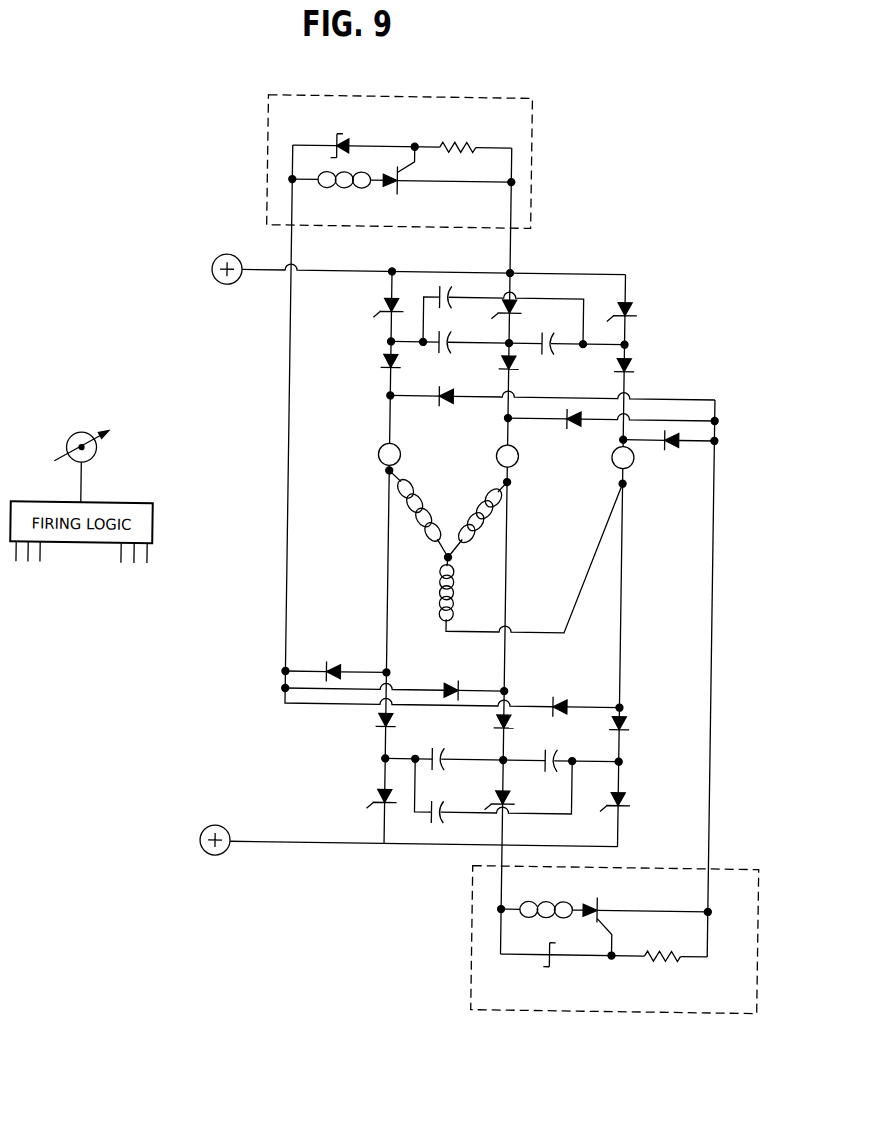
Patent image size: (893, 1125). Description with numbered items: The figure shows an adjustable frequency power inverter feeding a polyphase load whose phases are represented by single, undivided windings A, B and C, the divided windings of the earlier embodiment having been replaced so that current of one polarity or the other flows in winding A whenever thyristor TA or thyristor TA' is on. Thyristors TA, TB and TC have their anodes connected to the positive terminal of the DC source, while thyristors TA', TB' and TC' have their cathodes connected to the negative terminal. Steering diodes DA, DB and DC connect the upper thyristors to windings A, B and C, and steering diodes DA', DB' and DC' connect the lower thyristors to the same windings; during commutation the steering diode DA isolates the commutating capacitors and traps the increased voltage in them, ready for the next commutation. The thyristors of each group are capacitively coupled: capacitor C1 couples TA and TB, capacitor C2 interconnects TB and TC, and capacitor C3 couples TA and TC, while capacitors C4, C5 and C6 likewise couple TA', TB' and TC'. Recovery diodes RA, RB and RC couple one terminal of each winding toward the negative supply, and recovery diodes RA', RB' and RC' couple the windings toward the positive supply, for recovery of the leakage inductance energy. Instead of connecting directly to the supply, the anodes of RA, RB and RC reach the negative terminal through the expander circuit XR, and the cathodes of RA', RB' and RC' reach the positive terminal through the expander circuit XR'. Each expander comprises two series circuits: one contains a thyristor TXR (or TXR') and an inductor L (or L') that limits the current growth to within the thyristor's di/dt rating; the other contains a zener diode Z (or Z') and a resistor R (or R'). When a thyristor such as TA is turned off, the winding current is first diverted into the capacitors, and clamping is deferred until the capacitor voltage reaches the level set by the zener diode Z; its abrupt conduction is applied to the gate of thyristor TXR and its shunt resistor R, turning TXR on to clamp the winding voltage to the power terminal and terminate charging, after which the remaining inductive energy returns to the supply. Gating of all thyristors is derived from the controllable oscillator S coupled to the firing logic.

The expander circuit XR' is at (422, 162).
The zener diode Z' is at (340, 133).
The resistor R' is at (458, 135).
The inductor L' is at (344, 192).
The thyristor TXR' is at (407, 180).
The thyristor TA is at (378, 313).
The thyristor TB is at (516, 317).
The thyristor TC is at (633, 318).
The steering diode DA is at (376, 370).
The steering diode DB is at (520, 372).
The steering diode DC is at (636, 375).
The capacitor C1 is at (456, 307).
The capacitor C2 is at (456, 352).
The capacitor C3 is at (557, 356).
The recovery diode RA is at (445, 387).
The recovery diode RB is at (570, 436).
The recovery diode RC is at (667, 458).
The winding A is at (418, 513).
The winding B is at (477, 519).
The winding C is at (531, 557).
The recovery diode RA' is at (331, 659).
The recovery diode RB' is at (448, 679).
The recovery diode RC' is at (557, 698).
The steering diode DA' is at (399, 728).
The steering diode DB' is at (514, 732).
The steering diode DC' is at (634, 735).
The thyristor TA' is at (366, 808).
The thyristor TB' is at (509, 802).
The thyristor TC' is at (625, 807).
The capacitor C4 is at (439, 750).
The capacitor C5 is at (552, 753).
The capacitor C6 is at (441, 803).
The expander circuit XR is at (614, 963).
The inductor L is at (546, 900).
The thyristor TXR is at (599, 921).
The zener diode Z is at (549, 967).
The resistor R is at (662, 972).
The controllable oscillator S is at (64, 450).